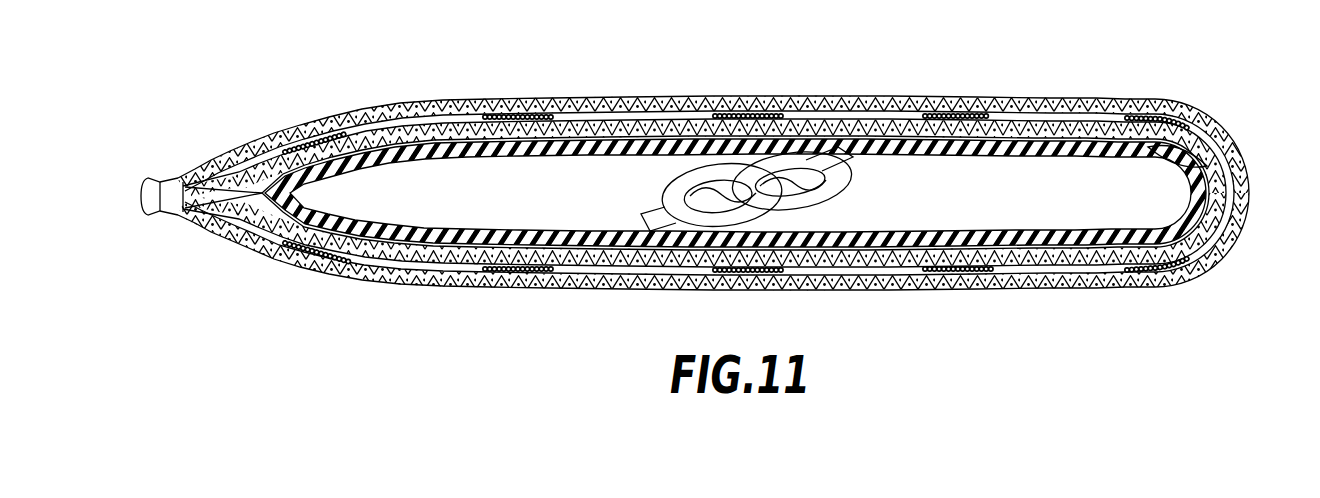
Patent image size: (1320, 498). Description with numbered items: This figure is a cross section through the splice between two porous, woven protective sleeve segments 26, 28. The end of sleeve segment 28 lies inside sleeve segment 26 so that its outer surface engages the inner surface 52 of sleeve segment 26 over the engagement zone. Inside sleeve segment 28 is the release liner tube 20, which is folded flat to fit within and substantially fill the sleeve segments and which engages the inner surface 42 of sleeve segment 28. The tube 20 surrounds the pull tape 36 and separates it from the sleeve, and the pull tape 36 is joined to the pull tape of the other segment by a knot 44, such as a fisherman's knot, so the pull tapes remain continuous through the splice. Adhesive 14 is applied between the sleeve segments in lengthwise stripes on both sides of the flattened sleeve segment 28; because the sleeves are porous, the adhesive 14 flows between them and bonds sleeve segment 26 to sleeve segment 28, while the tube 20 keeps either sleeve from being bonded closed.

The adhesive 14 is at (310, 140).
The tube 20 is at (427, 153).
The sleeve segment 26 is at (630, 98).
The sleeve segment 28 is at (690, 125).
The pull tape 36 is at (837, 180).
The inner surface 42 is at (1200, 162).
The knot 44 is at (663, 187).
The inner surface 52 is at (1052, 117).